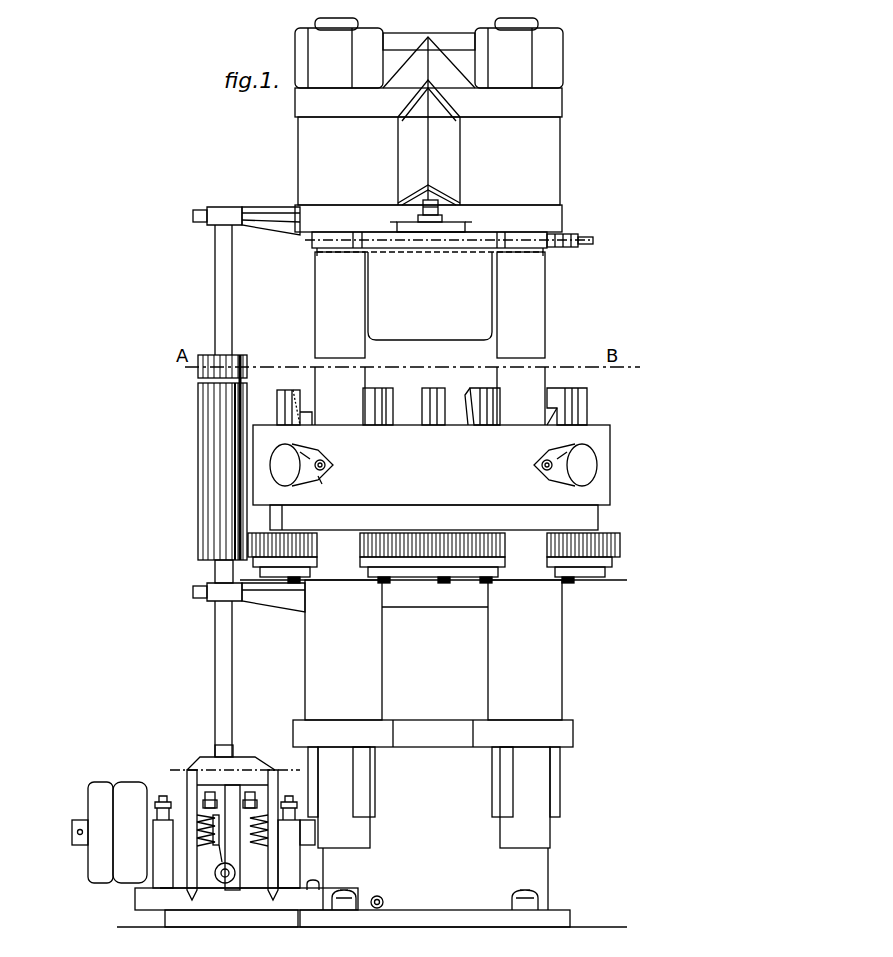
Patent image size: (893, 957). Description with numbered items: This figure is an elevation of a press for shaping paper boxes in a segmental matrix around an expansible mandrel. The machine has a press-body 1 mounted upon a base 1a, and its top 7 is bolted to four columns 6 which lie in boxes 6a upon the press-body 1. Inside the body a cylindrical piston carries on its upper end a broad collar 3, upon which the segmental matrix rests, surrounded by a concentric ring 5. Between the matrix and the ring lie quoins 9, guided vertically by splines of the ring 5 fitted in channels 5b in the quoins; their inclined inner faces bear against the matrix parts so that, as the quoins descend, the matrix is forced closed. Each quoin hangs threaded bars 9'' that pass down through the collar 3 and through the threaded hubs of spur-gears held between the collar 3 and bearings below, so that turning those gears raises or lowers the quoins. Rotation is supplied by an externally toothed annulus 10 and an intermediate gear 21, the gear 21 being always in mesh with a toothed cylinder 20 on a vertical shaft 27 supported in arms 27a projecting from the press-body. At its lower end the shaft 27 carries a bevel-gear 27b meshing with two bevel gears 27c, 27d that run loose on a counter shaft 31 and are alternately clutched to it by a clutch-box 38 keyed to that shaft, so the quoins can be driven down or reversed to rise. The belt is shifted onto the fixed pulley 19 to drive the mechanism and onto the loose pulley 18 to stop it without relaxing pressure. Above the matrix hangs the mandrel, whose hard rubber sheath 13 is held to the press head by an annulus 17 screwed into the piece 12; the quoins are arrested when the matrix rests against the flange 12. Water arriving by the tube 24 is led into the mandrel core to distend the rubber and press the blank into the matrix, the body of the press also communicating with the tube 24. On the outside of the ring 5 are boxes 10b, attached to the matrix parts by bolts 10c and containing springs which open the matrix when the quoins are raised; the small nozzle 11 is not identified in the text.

The press-body 1 is at (433, 758).
The base 1a is at (563, 926).
The collar 3 is at (434, 517).
The ring 5 is at (431, 465).
The channels 5b is at (376, 398).
The columns 6 is at (430, 338).
The boxes 6a is at (433, 650).
The top of the press 7 is at (429, 125).
The quoins 9 is at (363, 406).
The threaded bars 9'' is at (433, 570).
The externally toothed annulus 10 is at (550, 478).
The boxes 10b is at (451, 450).
The bolts 10c is at (328, 486).
The nozzle 11 is at (433, 465).
The flange of the mandrel 12 is at (431, 229).
The mandrel sheath 13 is at (430, 296).
The annulus 17 is at (500, 252).
The loose pulley 18 is at (100, 832).
The fixed pulley 19 is at (235, 854).
The toothed cylinder 20 is at (222, 457).
The intermediate gear 21 is at (282, 517).
The tube 24 is at (465, 238).
The vertical shaft 27 is at (215, 688).
The arms 27a is at (268, 200).
The bevel-gear 27b is at (230, 816).
The bevel gear 27c is at (185, 786).
The bevel gear 27d is at (268, 782).
The counter shaft 31 is at (72, 832).
The clutch-box 38 is at (215, 864).